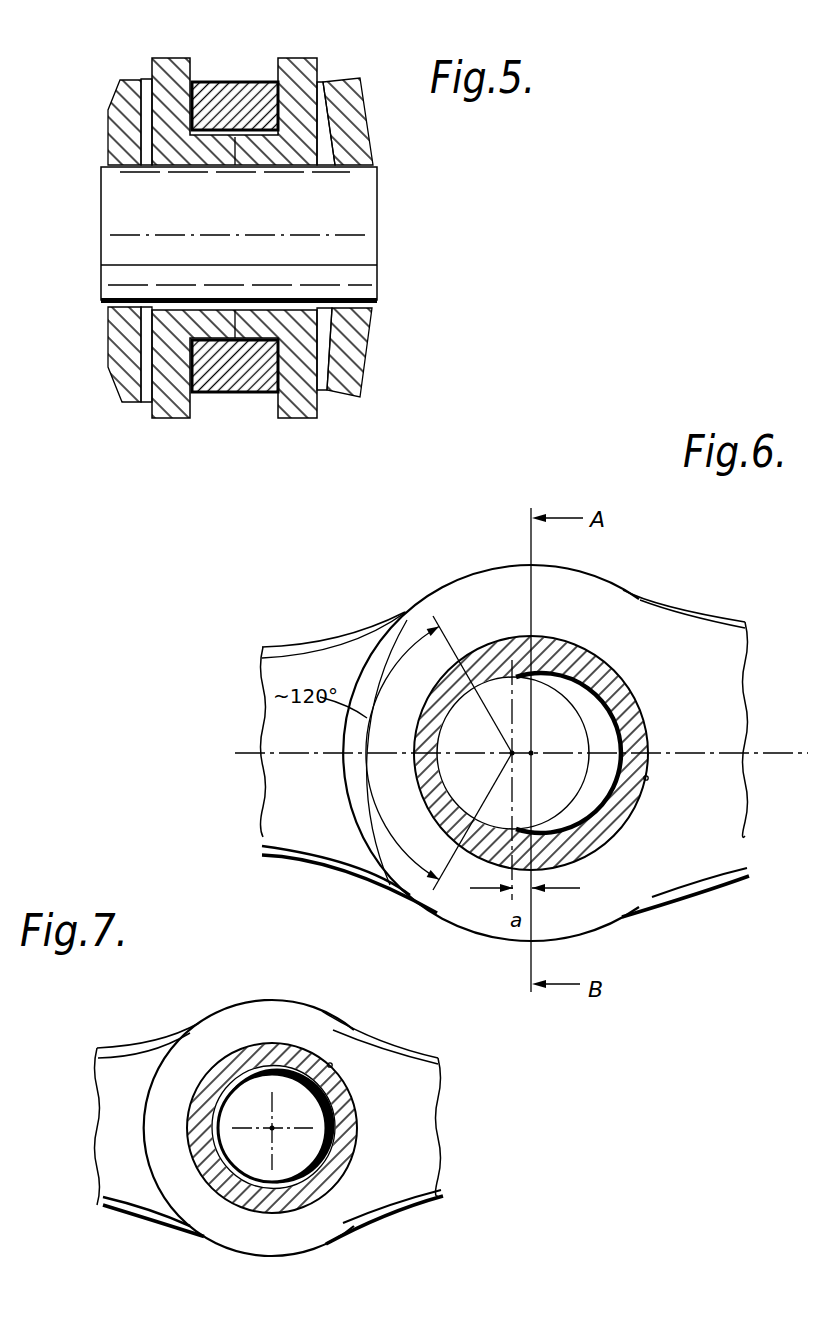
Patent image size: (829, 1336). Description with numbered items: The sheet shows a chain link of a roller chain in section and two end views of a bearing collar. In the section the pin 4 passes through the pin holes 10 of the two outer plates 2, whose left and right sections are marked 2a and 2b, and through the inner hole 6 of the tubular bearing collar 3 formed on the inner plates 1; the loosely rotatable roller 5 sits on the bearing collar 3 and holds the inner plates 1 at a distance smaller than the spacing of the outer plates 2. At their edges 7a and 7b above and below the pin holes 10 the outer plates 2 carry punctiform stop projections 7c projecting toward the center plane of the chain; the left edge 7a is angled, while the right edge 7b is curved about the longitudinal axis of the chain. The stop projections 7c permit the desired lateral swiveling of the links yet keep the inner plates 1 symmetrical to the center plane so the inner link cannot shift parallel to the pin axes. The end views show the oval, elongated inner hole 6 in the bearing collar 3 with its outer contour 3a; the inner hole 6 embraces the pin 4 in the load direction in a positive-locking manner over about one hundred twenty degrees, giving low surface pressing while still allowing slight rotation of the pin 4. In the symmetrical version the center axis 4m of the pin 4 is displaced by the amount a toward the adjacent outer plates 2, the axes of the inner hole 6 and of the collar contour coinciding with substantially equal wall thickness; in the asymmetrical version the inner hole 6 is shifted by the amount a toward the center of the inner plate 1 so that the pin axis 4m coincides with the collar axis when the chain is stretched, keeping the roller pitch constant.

In FIG. 5, the inner plate 1 is at (287, 75).
In FIG. 6, the inner plate 1 is at (718, 657).
In FIG. 7, the inner plate 1 is at (415, 1090).
In FIG. 6, the outer plate 2 is at (323, 840).
In FIG. 7, the outer plate 2 is at (143, 1180).
In FIG. 5, the first bearing half 2a is at (88, 235).
In FIG. 5, the second bearing half 2b is at (380, 235).
In FIG. 6, the bearing collar 3 is at (604, 823).
In FIG. 7, the bearing collar 3 is at (343, 1162).
In FIG. 6, the bore of bearing bush 3a is at (648, 780).
In FIG. 7, the bore of bearing bush 3a is at (331, 1064).
In FIG. 5, the pin 4 is at (358, 203).
In FIG. 6, the pin 4 is at (573, 745).
In FIG. 7, the pin 4 is at (303, 1107).
In FIG. 6, the center axis of the pin 4m is at (512, 752).
In FIG. 5, the roller 5 is at (248, 377).
In FIG. 6, the inner hole 6 is at (600, 743).
In FIG. 7, the inner hole 6 is at (334, 1120).
In FIG. 5, the angled edge of outer plate 7a is at (127, 95).
In FIG. 5, the curved edge of outer plate 7b is at (348, 82).
In FIG. 5, the stop projection 7c is at (147, 79).
In FIG. 5, the pin hole 10 is at (112, 295).